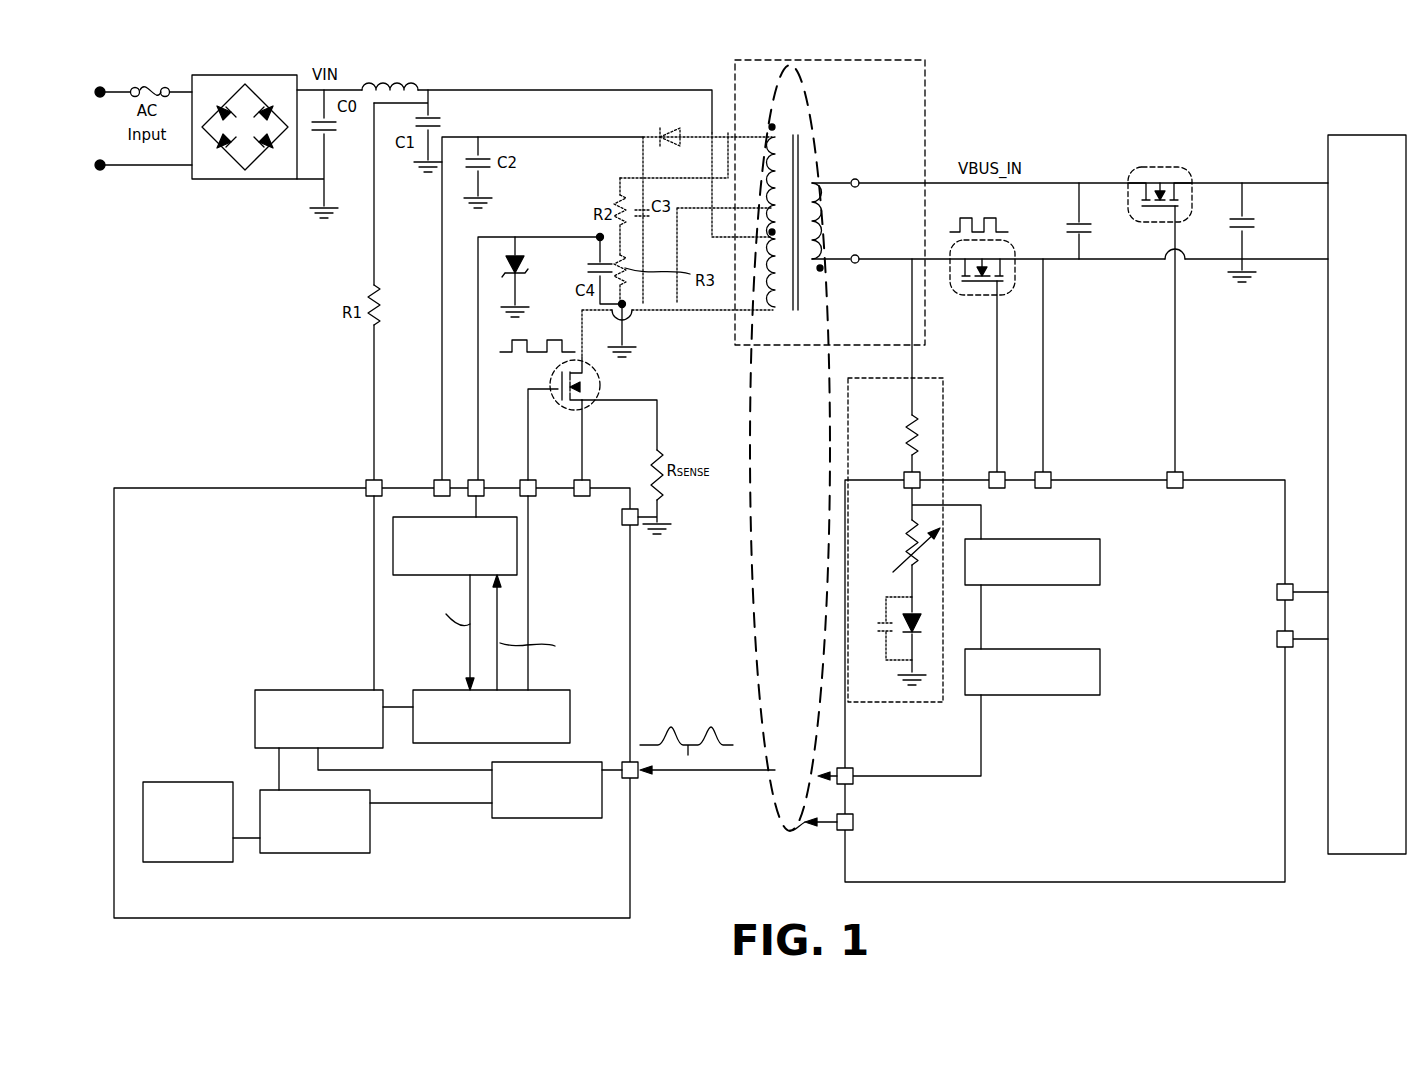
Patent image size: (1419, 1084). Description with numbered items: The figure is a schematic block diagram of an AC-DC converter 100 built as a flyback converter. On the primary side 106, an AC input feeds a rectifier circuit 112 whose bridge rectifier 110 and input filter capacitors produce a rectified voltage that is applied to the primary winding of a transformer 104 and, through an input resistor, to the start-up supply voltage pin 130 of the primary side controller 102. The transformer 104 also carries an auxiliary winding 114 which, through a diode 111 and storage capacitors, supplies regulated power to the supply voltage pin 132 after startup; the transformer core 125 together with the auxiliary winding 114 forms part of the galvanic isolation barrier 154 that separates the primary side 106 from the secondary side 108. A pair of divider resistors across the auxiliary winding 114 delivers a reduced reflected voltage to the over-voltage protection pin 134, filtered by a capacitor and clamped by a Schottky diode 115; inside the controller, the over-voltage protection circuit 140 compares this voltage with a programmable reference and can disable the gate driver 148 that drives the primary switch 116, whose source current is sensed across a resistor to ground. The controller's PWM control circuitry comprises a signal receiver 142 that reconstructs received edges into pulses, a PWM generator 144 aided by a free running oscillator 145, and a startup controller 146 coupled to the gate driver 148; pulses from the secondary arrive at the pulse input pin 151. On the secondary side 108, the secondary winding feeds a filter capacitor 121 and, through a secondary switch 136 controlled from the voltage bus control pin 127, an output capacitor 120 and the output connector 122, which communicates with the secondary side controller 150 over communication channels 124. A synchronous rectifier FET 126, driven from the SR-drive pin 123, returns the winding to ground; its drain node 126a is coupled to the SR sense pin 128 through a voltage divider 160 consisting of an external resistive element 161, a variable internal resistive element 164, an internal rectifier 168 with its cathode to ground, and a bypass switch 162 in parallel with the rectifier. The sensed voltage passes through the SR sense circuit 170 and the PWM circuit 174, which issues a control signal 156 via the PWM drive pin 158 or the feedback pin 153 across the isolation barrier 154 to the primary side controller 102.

The AC-DC converter 100 is at (1184, 914).
The primary side controller 102 is at (482, 899).
The transformer 104 is at (853, 119).
The primary side 106 is at (502, 82).
The secondary side 108 is at (1045, 125).
The bridge rectifier 110 is at (212, 76).
The diode 111 is at (670, 130).
The rectifier circuit 112 is at (292, 212).
The auxiliary winding 114 is at (752, 130).
The Schottky diode 115 is at (528, 262).
The primary switch 116 is at (600, 378).
The output capacitor 120 is at (1275, 228).
The filter capacitor 121 is at (1066, 222).
The output connector 122 is at (1362, 593).
The SR-drive pin 123 is at (1008, 490).
The communication channels 124 is at (1306, 500).
The core 125 is at (797, 310).
The synchronous rectifier FET 126 is at (985, 297).
The drain node 126a is at (905, 262).
The voltage bus control pin 127 is at (1168, 476).
The SR sense pin 128 is at (905, 476).
The start-up supply voltage pin 130 is at (368, 478).
The supply voltage pin 132 is at (437, 478).
The over-voltage protection pin 134 is at (482, 478).
The secondary switch 136 is at (1158, 166).
The over-voltage protection circuit 140 is at (442, 573).
The signal receiver 142 is at (568, 820).
The PWM generator 144 is at (373, 826).
The free running oscillator 145 is at (185, 862).
The startup controller 146 is at (255, 730).
The gate driver 148 is at (479, 741).
The secondary side controller 150 is at (1184, 869).
The PULSEIN pin 151 is at (637, 780).
The feedback pin 153 is at (855, 830).
The galvanic isolation barrier 154 is at (778, 494).
The control signal 156 is at (700, 780).
The PWM drive pin 158 is at (855, 784).
The voltage divider 160 is at (864, 404).
The external resistive element 161 is at (918, 422).
The bypass switch 162 is at (883, 636).
The internal resistive element 164 is at (900, 556).
The internal rectifier 168 is at (922, 617).
The SR sense circuit 170 is at (1092, 572).
The PWM circuit 174 is at (1070, 682).